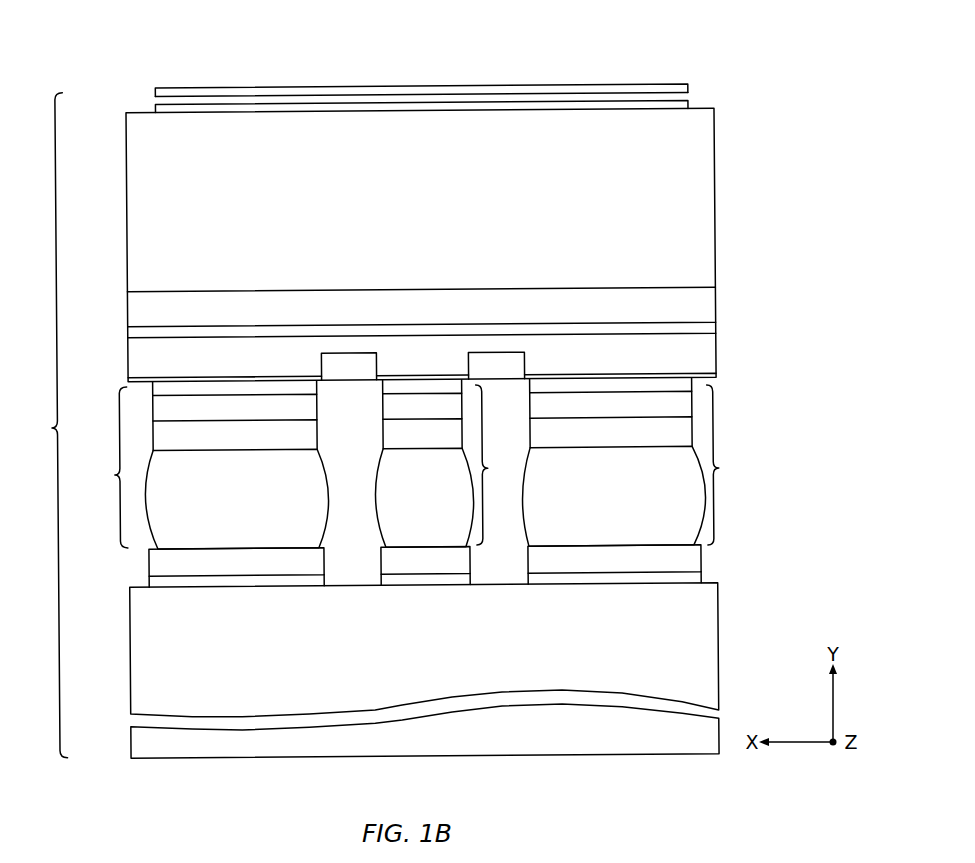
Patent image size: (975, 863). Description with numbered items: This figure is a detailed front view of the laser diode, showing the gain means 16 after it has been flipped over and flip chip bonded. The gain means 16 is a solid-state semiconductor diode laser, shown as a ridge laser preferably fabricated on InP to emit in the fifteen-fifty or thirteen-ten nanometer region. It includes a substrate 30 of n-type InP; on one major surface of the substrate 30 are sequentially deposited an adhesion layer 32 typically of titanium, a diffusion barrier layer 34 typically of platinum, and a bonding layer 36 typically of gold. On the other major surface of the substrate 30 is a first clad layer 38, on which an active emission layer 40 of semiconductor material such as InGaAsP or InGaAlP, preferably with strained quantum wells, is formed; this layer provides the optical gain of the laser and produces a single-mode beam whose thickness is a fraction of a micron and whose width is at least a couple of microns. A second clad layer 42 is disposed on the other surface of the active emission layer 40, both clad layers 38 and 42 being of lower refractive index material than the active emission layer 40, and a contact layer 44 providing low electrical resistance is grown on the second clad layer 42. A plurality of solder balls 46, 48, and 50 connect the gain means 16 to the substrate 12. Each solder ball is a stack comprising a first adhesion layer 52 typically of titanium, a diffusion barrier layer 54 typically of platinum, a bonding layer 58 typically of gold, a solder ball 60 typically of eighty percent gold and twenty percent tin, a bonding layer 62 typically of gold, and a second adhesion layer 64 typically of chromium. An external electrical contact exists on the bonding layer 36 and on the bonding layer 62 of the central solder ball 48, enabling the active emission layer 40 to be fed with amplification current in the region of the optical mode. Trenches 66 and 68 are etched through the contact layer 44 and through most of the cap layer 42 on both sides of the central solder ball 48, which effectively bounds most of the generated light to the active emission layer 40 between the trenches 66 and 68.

The substrate 12 is at (438, 648).
The gain means 16 is at (45, 425).
The substrate 30 is at (418, 225).
The adhesion layer 32 is at (691, 109).
The diffusion barrier layer 34 is at (158, 94).
The bonding layer 36 is at (543, 86).
The first clad layer 38 is at (715, 312).
The active emission layer 40 is at (133, 331).
The second clad layer 42 is at (412, 365).
The contact layer 44 is at (133, 378).
The solder ball 46 is at (107, 467).
The central solder ball 48 is at (496, 465).
The solder ball 50 is at (728, 465).
The first adhesion layer 52 is at (152, 385).
The diffusion barrier layer 54 is at (224, 416).
The bonding layer 58 is at (224, 444).
The solder ball 60 is at (224, 508).
The bonding layer 62 is at (224, 571).
The second adhesion layer 64 is at (156, 583).
The trench 66 is at (362, 376).
The trench 68 is at (486, 378).